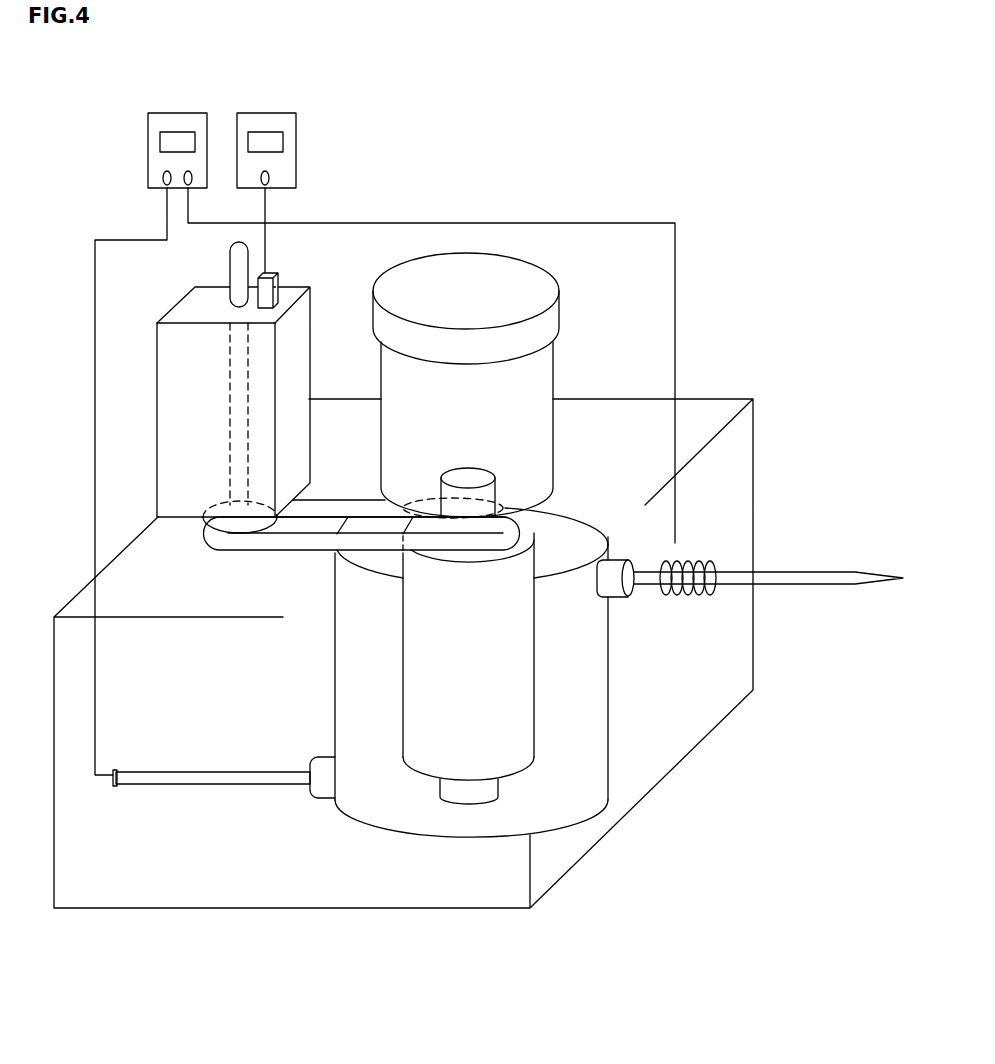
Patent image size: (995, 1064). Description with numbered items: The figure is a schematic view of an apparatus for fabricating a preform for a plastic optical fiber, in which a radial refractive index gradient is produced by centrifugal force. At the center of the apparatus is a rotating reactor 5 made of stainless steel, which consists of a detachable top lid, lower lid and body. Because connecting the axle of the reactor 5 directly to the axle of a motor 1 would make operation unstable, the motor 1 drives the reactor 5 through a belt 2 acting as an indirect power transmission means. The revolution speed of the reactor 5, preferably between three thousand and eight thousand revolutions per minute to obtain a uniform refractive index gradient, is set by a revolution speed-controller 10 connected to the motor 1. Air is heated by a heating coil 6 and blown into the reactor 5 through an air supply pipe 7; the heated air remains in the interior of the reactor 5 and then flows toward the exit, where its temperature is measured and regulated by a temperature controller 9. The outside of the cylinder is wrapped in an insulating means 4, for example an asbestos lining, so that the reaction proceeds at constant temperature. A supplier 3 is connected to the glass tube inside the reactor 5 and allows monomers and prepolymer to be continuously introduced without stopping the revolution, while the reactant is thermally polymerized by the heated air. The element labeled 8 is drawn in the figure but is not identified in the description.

The motor 1 is at (310, 322).
The belt 2 is at (325, 503).
The supplier 3 is at (560, 318).
The insulating means 4 is at (608, 653).
The reactor 5 is at (534, 728).
The heating coil 6 is at (697, 562).
The air supply pipe 7 is at (826, 570).
The electrode rod 8 is at (203, 770).
The temperature controller 9 is at (183, 113).
The revolution speed-controller 10 is at (260, 113).